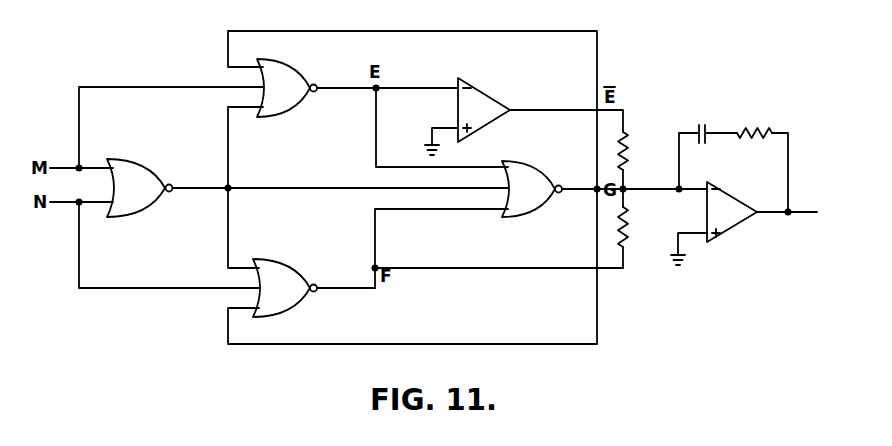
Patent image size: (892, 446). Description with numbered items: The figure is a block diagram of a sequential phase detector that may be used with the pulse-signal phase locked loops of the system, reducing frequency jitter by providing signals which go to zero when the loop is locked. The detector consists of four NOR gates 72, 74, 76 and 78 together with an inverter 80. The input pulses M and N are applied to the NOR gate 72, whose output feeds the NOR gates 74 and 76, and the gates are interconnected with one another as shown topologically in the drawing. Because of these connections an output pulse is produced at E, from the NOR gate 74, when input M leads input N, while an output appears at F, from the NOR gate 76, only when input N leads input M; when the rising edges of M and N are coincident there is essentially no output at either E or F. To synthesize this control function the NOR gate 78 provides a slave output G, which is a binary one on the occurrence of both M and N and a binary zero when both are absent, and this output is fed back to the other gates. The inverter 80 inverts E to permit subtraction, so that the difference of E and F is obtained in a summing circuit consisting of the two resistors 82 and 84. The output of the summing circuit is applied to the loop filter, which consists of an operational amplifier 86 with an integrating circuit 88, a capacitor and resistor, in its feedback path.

The NOR gate 72 is at (146, 167).
The NOR gate 74 is at (305, 74).
The NOR gate 76 is at (296, 268).
The NOR gate 78 is at (532, 214).
The inverter 80 is at (488, 90).
The resistor 82 is at (629, 150).
The resistor 84 is at (629, 231).
The operational amplifier 86 is at (722, 223).
The integrating circuit 88 is at (719, 133).